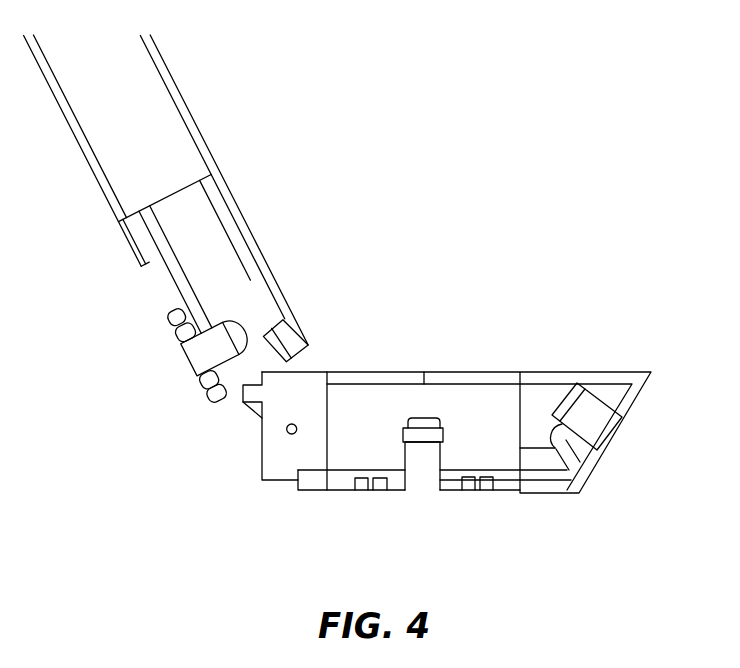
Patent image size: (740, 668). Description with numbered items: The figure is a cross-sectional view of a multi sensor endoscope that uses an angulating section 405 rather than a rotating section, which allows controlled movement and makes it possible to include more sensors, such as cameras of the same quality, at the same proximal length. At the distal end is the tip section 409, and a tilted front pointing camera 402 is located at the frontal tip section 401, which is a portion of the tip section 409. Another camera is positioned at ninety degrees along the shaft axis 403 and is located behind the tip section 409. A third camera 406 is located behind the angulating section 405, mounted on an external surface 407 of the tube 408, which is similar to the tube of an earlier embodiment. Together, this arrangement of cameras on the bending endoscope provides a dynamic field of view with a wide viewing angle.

The frontal tip section 401 is at (606, 458).
The tilted front pointing camera 402 is at (584, 467).
The shaft axis 403 is at (424, 491).
The angulating section 405 is at (244, 400).
The third camera 406 is at (188, 367).
The external surface 407 is at (300, 285).
The tube 408 is at (148, 124).
The tip section 409 is at (474, 396).